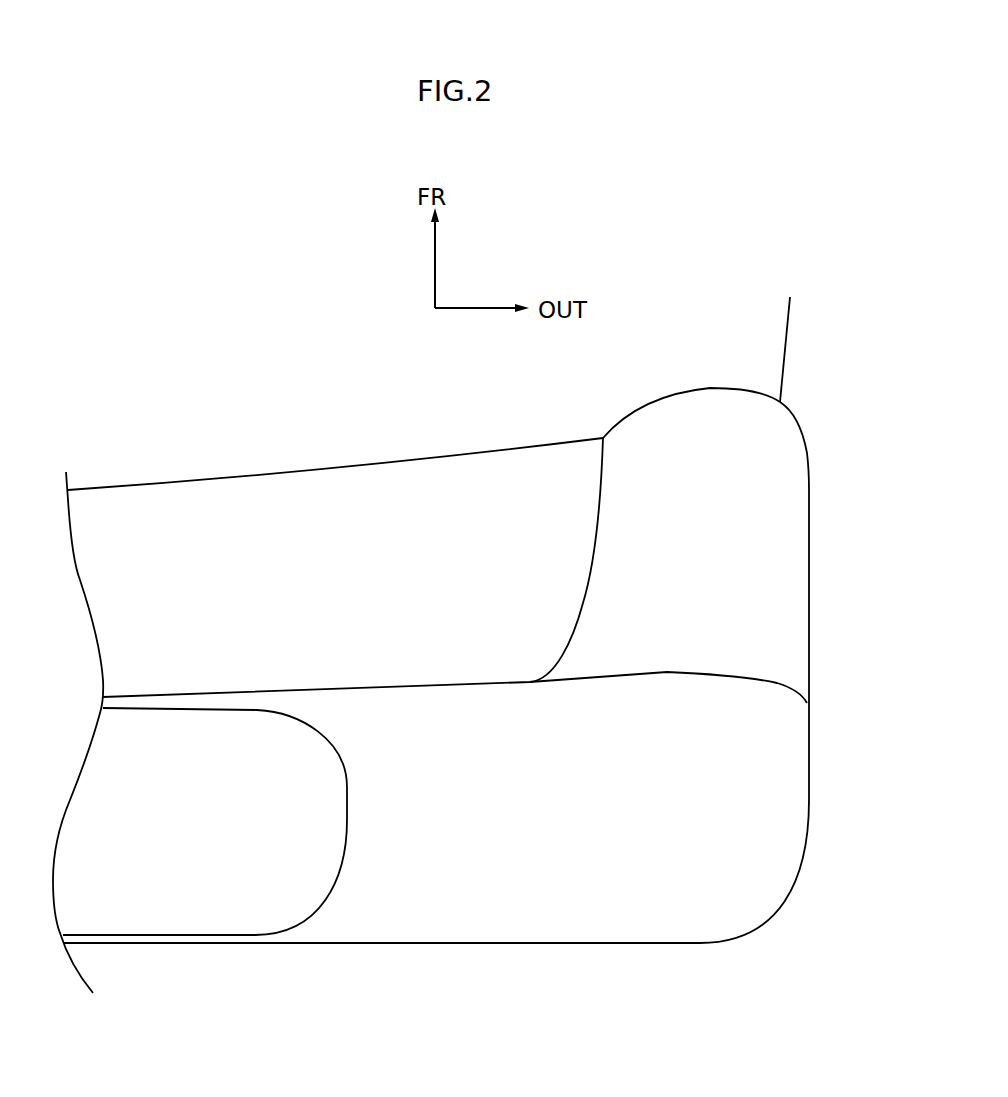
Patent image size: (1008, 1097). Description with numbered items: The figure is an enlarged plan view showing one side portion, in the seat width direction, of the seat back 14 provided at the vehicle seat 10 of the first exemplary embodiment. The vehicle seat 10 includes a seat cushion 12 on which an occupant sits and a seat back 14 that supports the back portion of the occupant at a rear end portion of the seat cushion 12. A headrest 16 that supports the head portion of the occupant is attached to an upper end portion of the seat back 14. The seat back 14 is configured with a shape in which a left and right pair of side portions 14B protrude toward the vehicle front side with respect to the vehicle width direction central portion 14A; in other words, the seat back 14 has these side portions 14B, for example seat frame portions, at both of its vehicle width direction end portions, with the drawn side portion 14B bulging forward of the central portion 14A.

The vehicle seat 10 is at (425, 962).
The seat cushion 12 is at (790, 338).
The seat back 14 is at (196, 480).
The central portion 14A is at (313, 472).
The side portion 14B is at (690, 390).
The headrest 16 is at (255, 912).